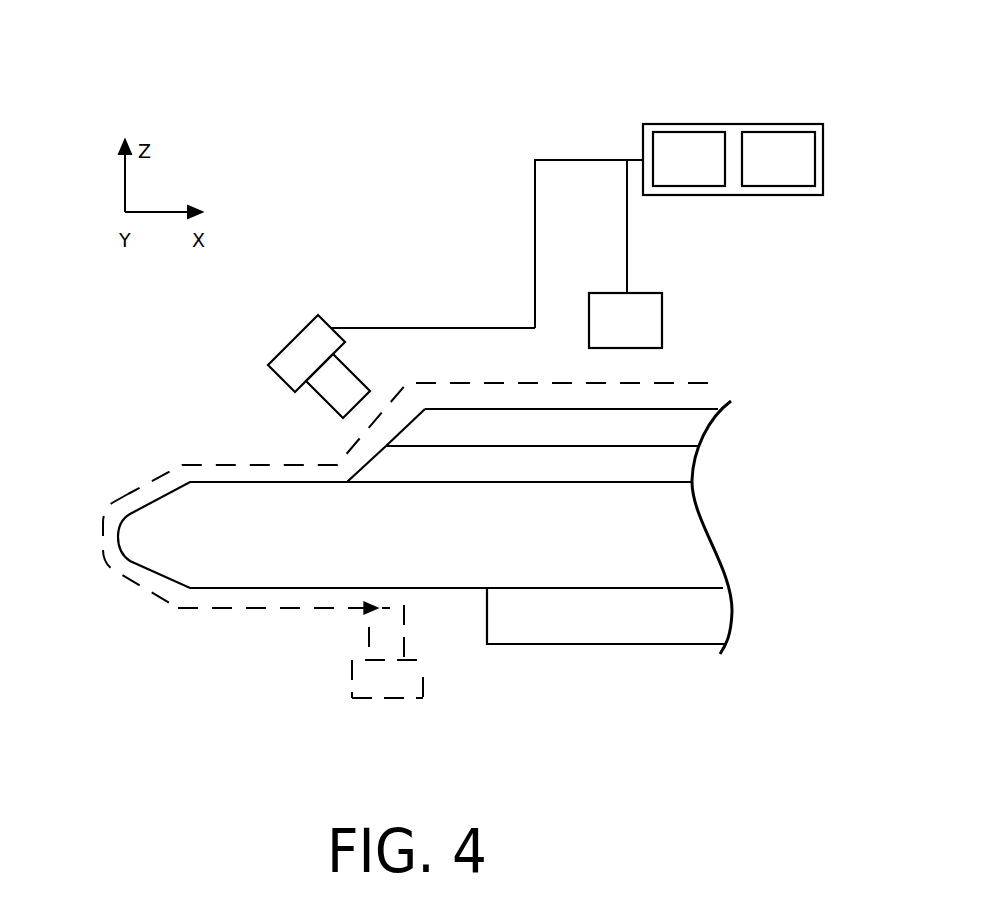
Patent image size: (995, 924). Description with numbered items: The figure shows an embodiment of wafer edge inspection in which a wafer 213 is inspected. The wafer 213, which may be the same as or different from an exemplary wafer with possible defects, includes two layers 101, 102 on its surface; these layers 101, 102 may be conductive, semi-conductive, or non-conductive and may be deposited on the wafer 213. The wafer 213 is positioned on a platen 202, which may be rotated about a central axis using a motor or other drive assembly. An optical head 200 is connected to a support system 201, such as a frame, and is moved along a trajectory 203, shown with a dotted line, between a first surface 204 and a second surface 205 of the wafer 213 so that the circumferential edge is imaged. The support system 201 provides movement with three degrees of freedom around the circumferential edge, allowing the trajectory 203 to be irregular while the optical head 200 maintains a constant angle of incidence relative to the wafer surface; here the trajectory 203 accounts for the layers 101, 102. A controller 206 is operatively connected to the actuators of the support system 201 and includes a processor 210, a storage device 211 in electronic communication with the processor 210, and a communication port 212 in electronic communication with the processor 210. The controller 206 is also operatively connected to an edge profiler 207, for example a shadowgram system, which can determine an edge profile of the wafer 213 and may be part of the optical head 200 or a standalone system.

The layer 101 is at (523, 464).
The layer 102 is at (552, 427).
The optical head 200 is at (321, 397).
The support system 201 is at (291, 341).
The platen 202 is at (606, 616).
The trajectory 203 is at (133, 488).
The first surface 204 is at (234, 473).
The second surface 205 is at (334, 599).
The controller 206 is at (735, 124).
The edge profiler 207 is at (625, 320).
The processor 210 is at (689, 159).
The storage device 211 is at (778, 159).
The communication port 212 is at (636, 141).
The wafer 213 is at (420, 535).